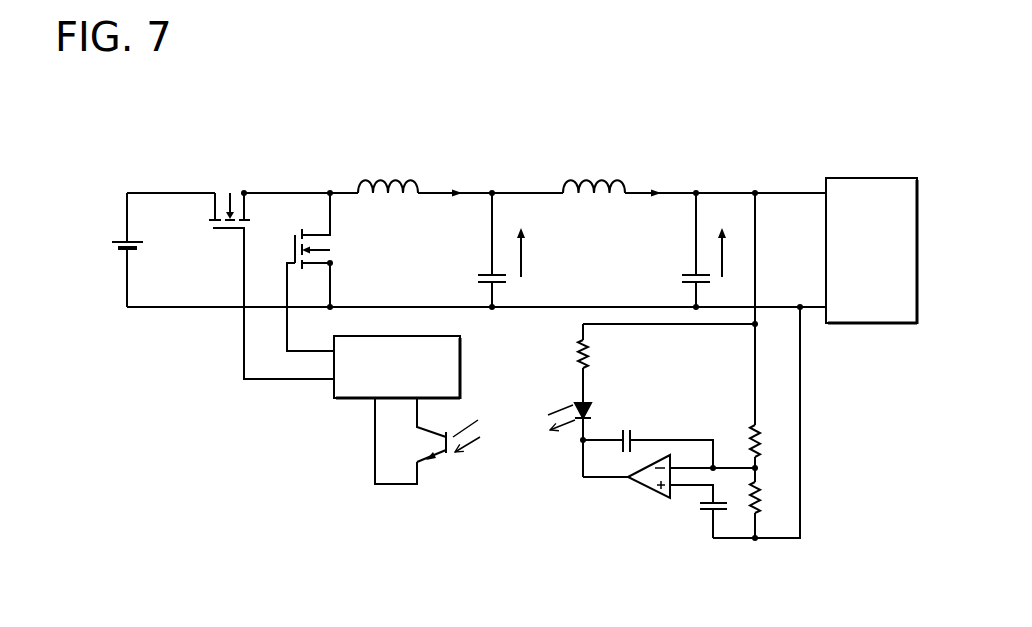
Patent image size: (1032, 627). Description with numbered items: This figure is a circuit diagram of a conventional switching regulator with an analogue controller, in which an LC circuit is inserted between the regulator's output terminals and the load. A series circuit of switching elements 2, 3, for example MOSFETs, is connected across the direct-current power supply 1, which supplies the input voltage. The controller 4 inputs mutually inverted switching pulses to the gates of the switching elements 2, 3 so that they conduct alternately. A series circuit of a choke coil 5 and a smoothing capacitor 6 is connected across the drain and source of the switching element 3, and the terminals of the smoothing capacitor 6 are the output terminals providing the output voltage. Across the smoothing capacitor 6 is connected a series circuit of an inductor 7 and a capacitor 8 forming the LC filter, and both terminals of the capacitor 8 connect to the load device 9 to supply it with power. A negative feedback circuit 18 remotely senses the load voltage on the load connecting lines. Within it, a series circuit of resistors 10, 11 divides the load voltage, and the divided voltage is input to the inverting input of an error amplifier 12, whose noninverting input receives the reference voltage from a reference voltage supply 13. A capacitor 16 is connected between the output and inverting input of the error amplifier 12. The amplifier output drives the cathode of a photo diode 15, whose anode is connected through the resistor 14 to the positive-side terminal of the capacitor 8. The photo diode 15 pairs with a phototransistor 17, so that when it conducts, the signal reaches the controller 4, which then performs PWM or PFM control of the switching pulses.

The direct-current power supply 1 is at (109, 250).
The switching element 2 is at (230, 186).
The switching element 3 is at (338, 250).
The controller 4 is at (345, 398).
The choke coil 5 is at (385, 175).
The smoothing capacitor 6 is at (483, 272).
The inductor 7 is at (595, 175).
The capacitor 8 is at (688, 268).
The load device 9 is at (862, 178).
The resistor 10 is at (768, 440).
The resistor 11 is at (768, 498).
The error amplifier 12 is at (650, 478).
The reference voltage supply 13 is at (703, 515).
The resistor 14 is at (572, 360).
The photo diode 15 is at (572, 426).
The capacitor 16 is at (634, 428).
The phototransistor 17 is at (446, 460).
The negative feedback circuit 18 is at (824, 396).